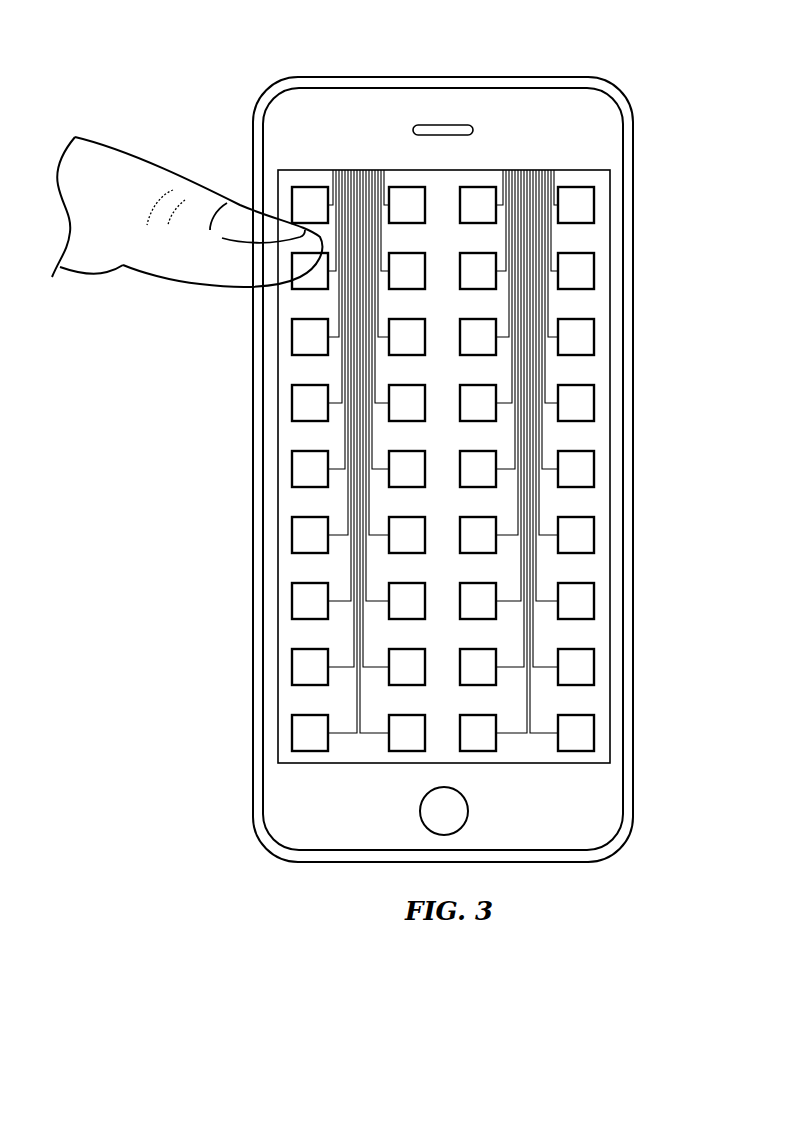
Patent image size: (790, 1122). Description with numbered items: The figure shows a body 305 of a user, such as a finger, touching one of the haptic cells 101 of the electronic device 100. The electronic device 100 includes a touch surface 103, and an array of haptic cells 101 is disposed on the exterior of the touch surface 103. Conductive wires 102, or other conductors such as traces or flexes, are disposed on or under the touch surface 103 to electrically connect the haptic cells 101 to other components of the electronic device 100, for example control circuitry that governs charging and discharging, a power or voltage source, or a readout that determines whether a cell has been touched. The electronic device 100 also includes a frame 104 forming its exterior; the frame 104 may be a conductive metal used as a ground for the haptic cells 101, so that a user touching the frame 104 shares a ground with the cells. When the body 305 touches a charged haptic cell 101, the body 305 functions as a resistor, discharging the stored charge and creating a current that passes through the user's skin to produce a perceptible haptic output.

The electronic device 100 is at (253, 46).
The haptic cells 101 is at (596, 200).
The conductive wires 102 is at (545, 368).
The touch surface 103 is at (608, 247).
The frame 104 is at (633, 288).
The body 305 is at (197, 188).